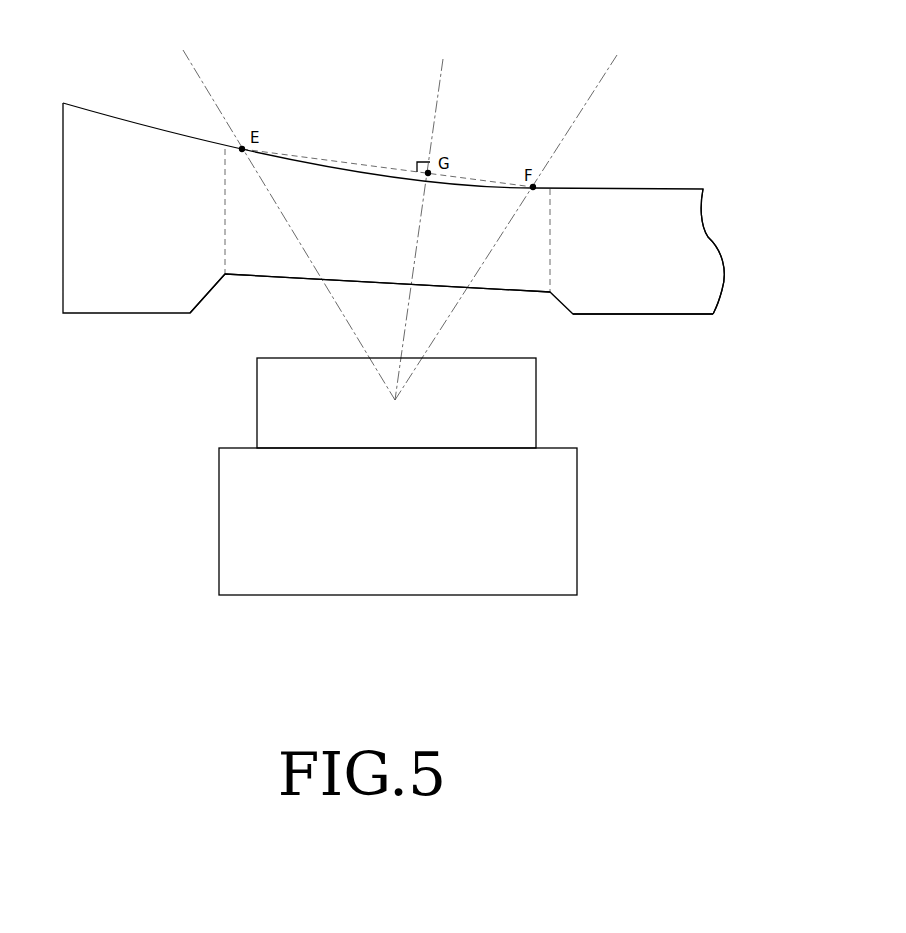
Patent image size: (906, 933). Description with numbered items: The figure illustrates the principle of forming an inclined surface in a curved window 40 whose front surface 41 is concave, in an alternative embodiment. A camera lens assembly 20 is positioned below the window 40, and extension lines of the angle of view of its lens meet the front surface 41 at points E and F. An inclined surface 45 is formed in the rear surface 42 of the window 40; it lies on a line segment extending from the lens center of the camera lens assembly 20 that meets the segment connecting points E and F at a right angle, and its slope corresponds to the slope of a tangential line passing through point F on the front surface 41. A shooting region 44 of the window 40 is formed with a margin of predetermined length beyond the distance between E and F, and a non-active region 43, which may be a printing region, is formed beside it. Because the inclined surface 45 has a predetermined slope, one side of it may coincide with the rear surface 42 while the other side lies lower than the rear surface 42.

The camera lens assembly 20 is at (233, 541).
The window 40 is at (667, 175).
The front surface 41 is at (138, 125).
The rear surface 42 is at (650, 316).
The non-active region 43 is at (643, 250).
The shooting region 44 is at (263, 245).
The inclined surface 45 is at (285, 277).